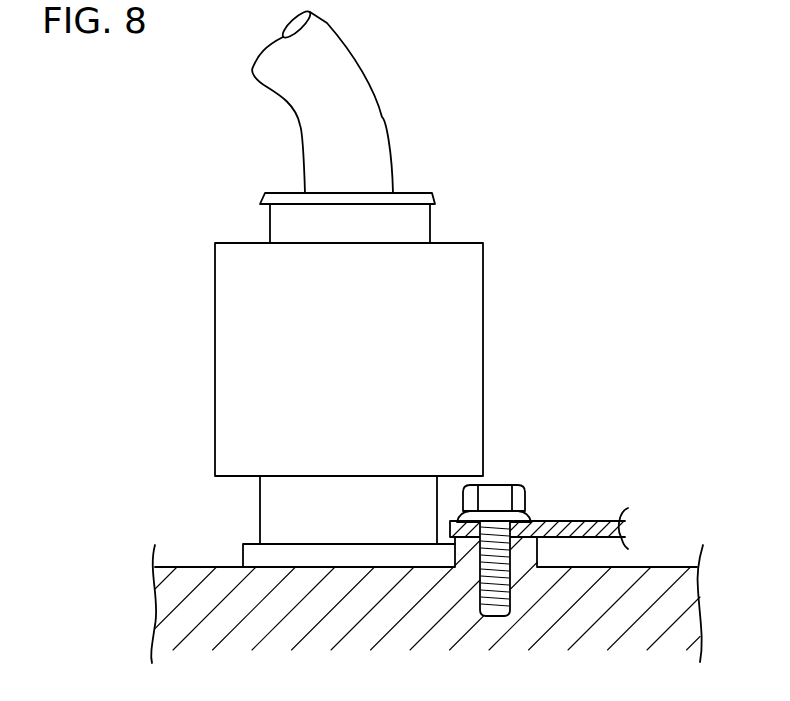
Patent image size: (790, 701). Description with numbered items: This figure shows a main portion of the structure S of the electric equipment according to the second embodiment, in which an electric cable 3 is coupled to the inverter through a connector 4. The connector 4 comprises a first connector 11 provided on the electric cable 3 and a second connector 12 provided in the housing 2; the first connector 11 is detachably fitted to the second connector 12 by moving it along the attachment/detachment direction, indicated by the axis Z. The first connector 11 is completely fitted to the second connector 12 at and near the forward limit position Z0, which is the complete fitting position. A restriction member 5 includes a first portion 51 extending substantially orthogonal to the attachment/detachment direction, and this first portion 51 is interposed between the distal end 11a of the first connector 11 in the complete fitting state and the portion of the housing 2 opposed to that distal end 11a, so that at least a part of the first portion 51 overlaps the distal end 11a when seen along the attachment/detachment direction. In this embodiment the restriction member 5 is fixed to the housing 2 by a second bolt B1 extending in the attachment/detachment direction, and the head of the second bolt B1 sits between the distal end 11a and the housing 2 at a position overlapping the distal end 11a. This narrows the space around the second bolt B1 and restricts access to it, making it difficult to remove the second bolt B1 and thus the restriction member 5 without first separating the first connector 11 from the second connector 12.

The electric cable 3 is at (348, 63).
The structure S is at (568, 293).
The Z axis direction Z is at (113, 308).
The forward limit position Z0 is at (213, 476).
The connector 4 is at (255, 521).
The first connector 11 is at (240, 478).
The second connector 12 is at (268, 516).
The distal end 11a is at (348, 477).
The housing 2 is at (655, 567).
The restriction member 5 is at (543, 483).
The first portion 51 is at (600, 512).
The second bolt B1 is at (498, 488).